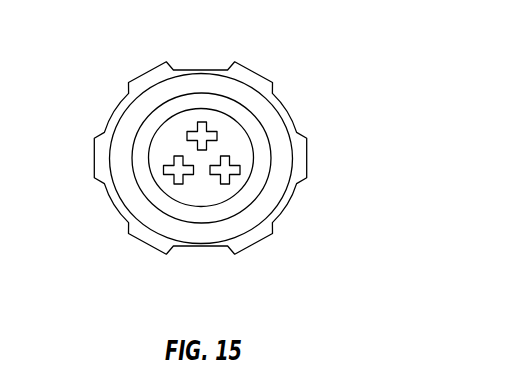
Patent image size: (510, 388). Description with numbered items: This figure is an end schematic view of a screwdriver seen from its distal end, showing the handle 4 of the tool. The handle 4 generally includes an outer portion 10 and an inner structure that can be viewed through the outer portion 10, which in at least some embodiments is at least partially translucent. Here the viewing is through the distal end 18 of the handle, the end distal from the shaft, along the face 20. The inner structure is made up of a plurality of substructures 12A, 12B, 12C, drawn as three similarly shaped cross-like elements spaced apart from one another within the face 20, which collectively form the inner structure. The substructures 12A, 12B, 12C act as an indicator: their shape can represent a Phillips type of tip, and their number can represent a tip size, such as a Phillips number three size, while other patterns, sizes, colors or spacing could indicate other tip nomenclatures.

The handle 4 is at (202, 70).
The outer portion 10 is at (291, 122).
The distal end 18 is at (237, 102).
The face 20 is at (243, 166).
The substructure 12A is at (186, 136).
The substructure 12B is at (236, 184).
The substructure 12C is at (166, 183).